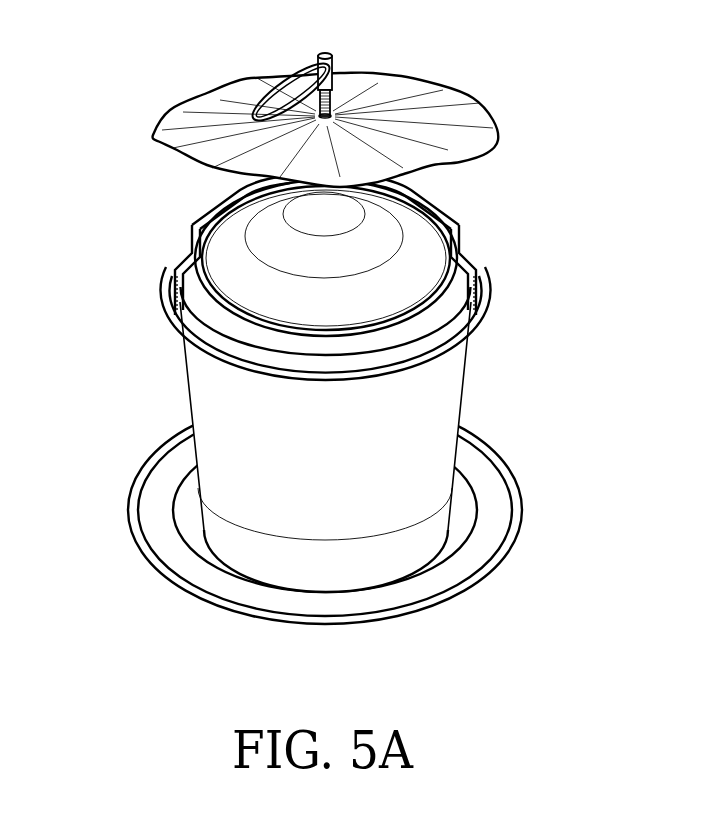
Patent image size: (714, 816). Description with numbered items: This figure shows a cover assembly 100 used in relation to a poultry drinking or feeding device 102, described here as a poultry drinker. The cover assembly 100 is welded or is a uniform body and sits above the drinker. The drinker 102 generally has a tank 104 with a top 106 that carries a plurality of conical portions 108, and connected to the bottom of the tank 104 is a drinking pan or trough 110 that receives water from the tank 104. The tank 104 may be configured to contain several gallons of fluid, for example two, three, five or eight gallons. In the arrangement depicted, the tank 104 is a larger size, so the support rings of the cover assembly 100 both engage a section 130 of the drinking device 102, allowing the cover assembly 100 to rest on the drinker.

The cover assembly 100 is at (188, 57).
The poultry drinking or feeding device 102 is at (178, 403).
The tank 104 is at (385, 540).
The top 106 is at (385, 232).
The conical portions 108 is at (433, 298).
The drinking pan or trough 110 is at (160, 495).
The section 130 is at (220, 308).